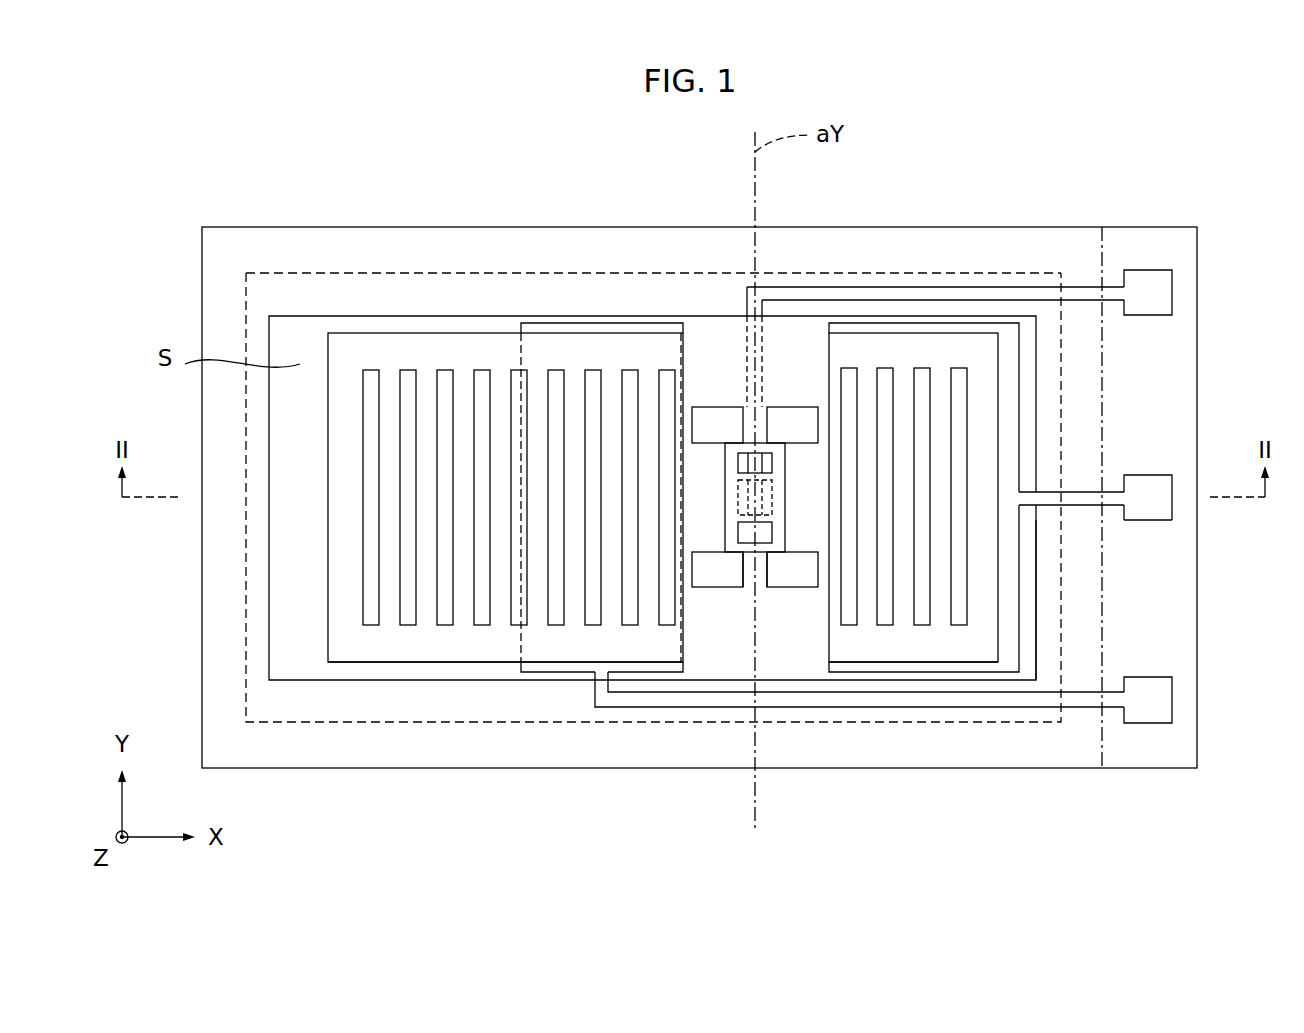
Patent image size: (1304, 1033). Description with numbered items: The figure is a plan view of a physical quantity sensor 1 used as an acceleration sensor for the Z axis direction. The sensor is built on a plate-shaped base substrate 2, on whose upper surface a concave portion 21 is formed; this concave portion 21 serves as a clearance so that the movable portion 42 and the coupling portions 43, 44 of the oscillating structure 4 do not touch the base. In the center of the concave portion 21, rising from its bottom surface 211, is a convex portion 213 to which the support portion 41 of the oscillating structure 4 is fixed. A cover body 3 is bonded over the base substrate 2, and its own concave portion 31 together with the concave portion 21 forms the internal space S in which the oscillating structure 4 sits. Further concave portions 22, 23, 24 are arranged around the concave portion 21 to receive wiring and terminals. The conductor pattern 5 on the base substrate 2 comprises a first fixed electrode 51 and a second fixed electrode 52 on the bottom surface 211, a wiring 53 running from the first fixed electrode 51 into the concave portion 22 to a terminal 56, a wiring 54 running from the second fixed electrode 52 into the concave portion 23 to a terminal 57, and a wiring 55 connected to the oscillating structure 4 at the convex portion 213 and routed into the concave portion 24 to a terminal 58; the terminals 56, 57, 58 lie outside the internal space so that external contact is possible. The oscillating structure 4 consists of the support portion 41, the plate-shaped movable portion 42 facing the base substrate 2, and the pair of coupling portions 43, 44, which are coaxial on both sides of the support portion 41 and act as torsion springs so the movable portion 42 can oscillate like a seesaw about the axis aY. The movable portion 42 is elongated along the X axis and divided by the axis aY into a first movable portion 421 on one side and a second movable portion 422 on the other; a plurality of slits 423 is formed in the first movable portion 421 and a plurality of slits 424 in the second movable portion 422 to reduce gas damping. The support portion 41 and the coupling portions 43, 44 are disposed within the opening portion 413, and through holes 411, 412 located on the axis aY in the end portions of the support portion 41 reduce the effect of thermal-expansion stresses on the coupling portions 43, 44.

The physical quantity sensor 1 is at (1153, 157).
The base substrate 2 is at (1150, 238).
The cover body 3 is at (1034, 262).
The oscillating structure 4 is at (624, 312).
The conductor pattern 5 is at (912, 272).
The concave portion 21 is at (1036, 364).
The concave portion 22 is at (1093, 493).
The concave portion 23 is at (1072, 708).
The concave portion 24 is at (1080, 296).
The concave portion 31 is at (950, 277).
The support portion 41 is at (727, 488).
The movable portion 42 is at (568, 335).
The coupling portion 43 is at (745, 428).
The coupling portion 44 is at (767, 562).
The first fixed electrode 51 is at (887, 328).
The second fixed electrode 52 is at (527, 322).
The wiring 53 is at (1148, 512).
The wiring 54 is at (1037, 698).
The wiring 55 is at (1042, 293).
The terminal 56 is at (1153, 487).
The terminal 57 is at (1157, 700).
The terminal 58 is at (1157, 290).
The bottom surface 211 is at (1028, 598).
The convex portion 213 is at (775, 498).
The through hole 411 is at (775, 460).
The through hole 412 is at (762, 548).
The opening portion 413 is at (693, 543).
The first movable portion 421 is at (962, 648).
The second movable portion 422 is at (475, 643).
The slits 423 is at (919, 598).
The slits 424 is at (400, 594).